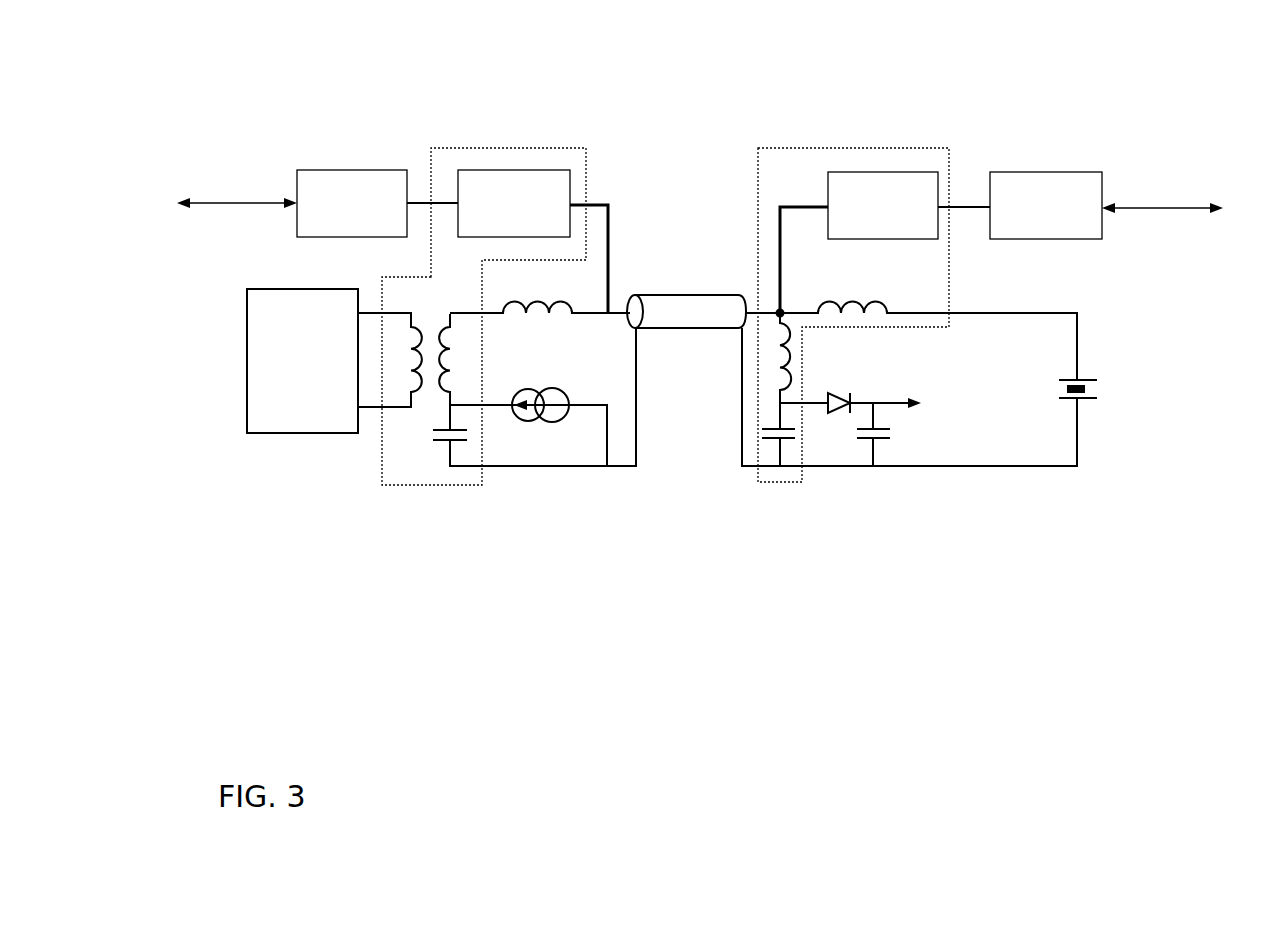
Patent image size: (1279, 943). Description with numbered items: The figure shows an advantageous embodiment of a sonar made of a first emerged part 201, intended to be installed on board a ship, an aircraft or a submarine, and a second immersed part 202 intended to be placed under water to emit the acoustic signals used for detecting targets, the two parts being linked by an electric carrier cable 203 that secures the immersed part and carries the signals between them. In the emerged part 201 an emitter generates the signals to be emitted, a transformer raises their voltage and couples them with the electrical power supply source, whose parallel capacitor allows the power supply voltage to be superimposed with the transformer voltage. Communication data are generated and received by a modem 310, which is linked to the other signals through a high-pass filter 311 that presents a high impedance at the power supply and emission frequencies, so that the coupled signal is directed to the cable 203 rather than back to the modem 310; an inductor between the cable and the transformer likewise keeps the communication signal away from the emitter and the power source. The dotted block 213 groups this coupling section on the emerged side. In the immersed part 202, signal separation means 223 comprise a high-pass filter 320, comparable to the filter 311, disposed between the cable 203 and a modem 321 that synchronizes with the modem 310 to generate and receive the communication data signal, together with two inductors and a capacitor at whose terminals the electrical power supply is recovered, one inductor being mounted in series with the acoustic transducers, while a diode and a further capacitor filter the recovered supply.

The modem 310 is at (350, 170).
The high-pass filter 311 is at (510, 170).
The communication coupling unit (transmitter side) 213 is at (586, 172).
The signal separation means 223 is at (757, 172).
The high-pass filter 320 is at (882, 172).
The modem 321 is at (1050, 172).
The emerged part 201 is at (623, 513).
The immersed part 202 is at (758, 513).
The electric carrier cable 203 is at (698, 329).